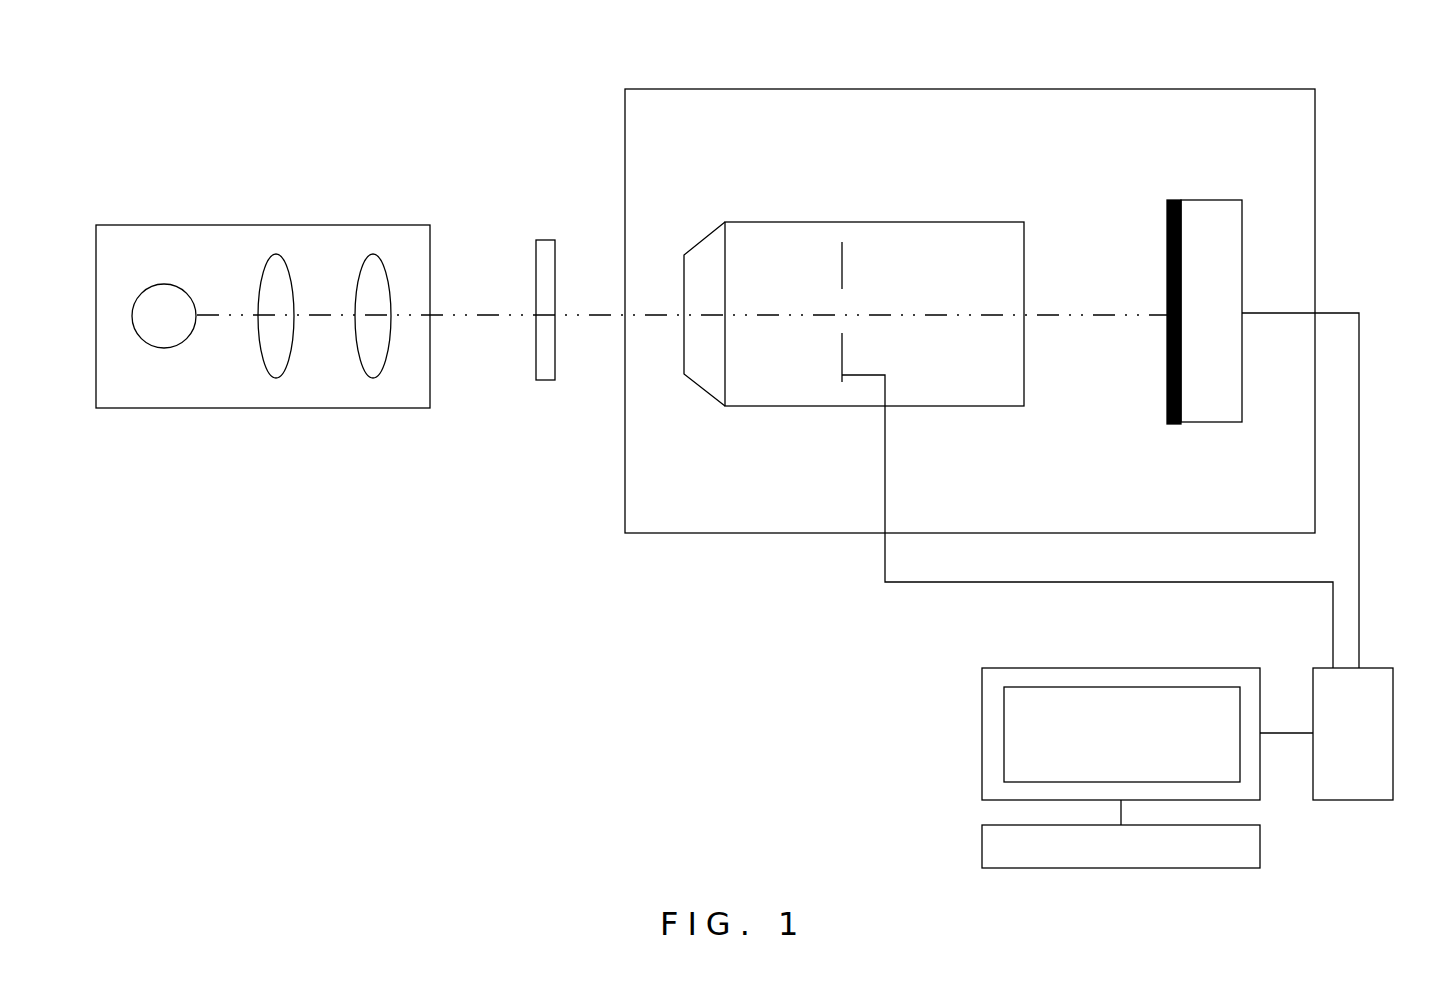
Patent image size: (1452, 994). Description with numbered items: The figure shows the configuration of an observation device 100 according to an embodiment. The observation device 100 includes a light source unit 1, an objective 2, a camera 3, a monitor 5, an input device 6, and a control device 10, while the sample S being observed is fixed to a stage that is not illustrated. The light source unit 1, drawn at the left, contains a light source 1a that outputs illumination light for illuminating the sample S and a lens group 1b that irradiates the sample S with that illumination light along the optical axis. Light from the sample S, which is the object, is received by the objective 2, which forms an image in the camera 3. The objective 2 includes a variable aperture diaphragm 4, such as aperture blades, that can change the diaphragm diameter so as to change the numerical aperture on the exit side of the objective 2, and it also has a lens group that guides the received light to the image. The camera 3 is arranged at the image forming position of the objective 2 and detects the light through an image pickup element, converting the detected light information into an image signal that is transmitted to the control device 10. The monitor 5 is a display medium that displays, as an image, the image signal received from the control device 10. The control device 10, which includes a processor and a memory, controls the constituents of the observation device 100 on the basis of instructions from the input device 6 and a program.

The observation device 100 is at (190, 67).
The light source unit 1 is at (158, 224).
The light source 1a is at (170, 284).
The lens group 1b is at (383, 252).
The sample S is at (545, 240).
The objective 2 is at (791, 225).
The camera 3 is at (1203, 200).
The variable aperture diaphragm 4 is at (840, 373).
The monitor 5 is at (982, 712).
The input device 6 is at (982, 840).
The control device 10 is at (1393, 672).